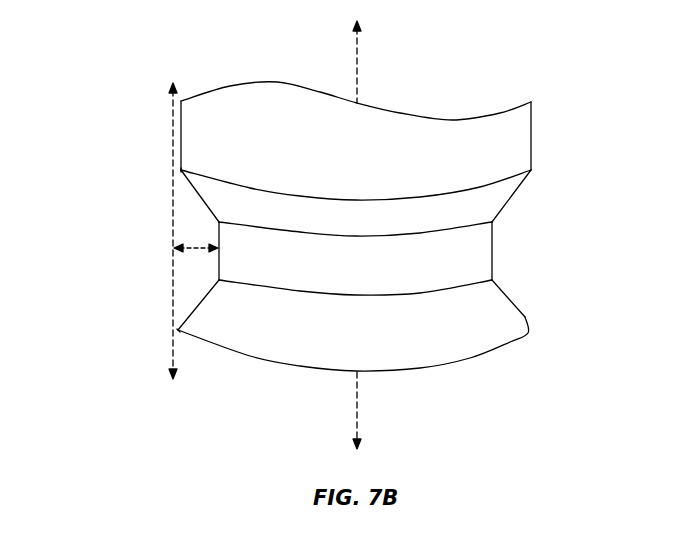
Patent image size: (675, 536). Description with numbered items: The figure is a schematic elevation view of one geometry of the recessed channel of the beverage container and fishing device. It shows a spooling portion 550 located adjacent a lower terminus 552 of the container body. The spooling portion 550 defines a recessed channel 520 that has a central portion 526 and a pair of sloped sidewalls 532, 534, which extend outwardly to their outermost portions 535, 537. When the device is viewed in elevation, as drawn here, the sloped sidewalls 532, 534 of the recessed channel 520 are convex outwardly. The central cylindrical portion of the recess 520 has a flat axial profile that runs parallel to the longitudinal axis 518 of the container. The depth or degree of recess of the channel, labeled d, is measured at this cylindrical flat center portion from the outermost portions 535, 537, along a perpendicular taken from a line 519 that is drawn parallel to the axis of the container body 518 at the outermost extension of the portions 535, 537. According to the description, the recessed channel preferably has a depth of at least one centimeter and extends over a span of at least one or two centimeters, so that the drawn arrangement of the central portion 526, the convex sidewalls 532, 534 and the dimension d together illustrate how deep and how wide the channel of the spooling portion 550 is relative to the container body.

The longitudinal axis of the container body 518 is at (360, 79).
The line parallel to the axis 519 is at (168, 340).
The recessed channel 520 is at (494, 241).
The central portion 526 is at (495, 255).
The sloped sidewall 532 is at (535, 177).
The sloped sidewall 534 is at (525, 318).
The outermost portion 535 is at (141, 319).
The outermost portion 537 is at (181, 171).
The spooling portion 550 is at (326, 226).
The lower terminus 552 is at (531, 130).
The depth of recess d is at (192, 243).